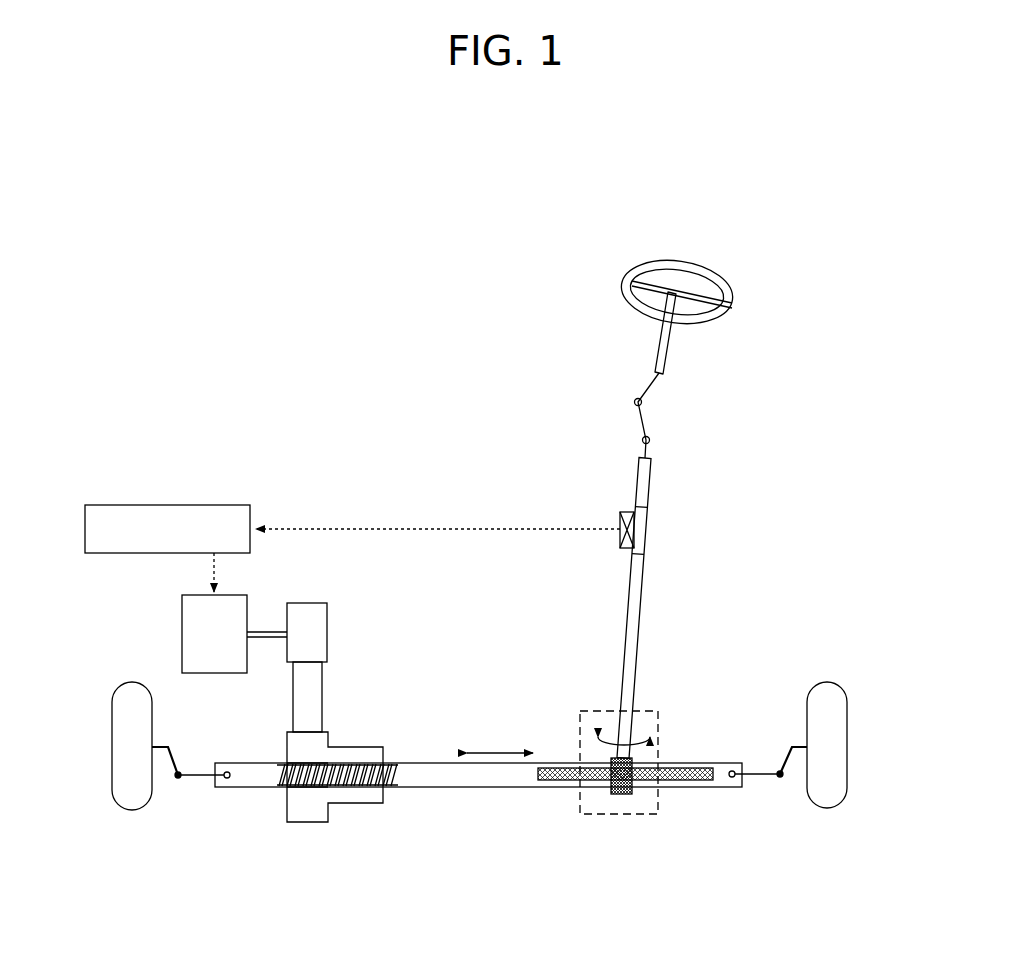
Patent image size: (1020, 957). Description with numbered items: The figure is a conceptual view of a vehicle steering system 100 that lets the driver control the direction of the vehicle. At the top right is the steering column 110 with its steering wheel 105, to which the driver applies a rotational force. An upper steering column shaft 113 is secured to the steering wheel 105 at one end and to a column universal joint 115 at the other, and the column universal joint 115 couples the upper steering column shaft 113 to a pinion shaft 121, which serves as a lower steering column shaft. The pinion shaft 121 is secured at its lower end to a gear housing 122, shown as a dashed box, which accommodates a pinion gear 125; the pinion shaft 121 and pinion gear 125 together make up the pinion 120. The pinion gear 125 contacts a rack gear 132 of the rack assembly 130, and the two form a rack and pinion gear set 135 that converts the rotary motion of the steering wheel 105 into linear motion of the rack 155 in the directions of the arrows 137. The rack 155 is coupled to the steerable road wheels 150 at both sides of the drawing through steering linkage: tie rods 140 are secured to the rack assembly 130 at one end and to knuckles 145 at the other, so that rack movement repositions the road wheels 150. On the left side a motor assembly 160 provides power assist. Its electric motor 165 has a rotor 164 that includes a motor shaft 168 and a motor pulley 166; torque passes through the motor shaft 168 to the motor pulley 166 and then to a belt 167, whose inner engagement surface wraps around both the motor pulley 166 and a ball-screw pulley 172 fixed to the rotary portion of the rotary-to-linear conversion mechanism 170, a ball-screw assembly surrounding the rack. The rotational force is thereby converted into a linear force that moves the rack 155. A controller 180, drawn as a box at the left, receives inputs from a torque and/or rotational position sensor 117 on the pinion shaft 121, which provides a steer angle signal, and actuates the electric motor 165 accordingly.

The steering system 100 is at (193, 295).
The steering wheel 105 is at (622, 283).
The steering column 110 is at (778, 379).
The upper steering column shaft 113 is at (672, 343).
The column universal joint 115 is at (650, 438).
The torque and/or rotational position sensor 117 is at (627, 512).
The pinion 120 is at (655, 679).
The pinion shaft 121 is at (645, 580).
The gear housing 122 is at (658, 725).
The pinion gear 125 is at (623, 796).
The rack assembly 130 is at (467, 797).
The rack gear 132 is at (677, 787).
The rack and pinion gear set 135 is at (683, 860).
The arrows 137 is at (527, 778).
The tie rods 140 is at (757, 782).
The knuckles 145 is at (785, 757).
The steerable road wheels 150 is at (120, 720).
The rack 155 is at (490, 787).
The motor assembly 160 is at (268, 681).
The rotor 164 is at (400, 558).
The electric motor 165 is at (182, 605).
The motor pulley 166 is at (308, 636).
The belt 167 is at (308, 705).
The motor shaft 168 is at (265, 629).
The rotary-to-linear conversion mechanism 170 is at (352, 813).
The ball-screw pulley 172 is at (297, 822).
The controller 180 is at (190, 505).